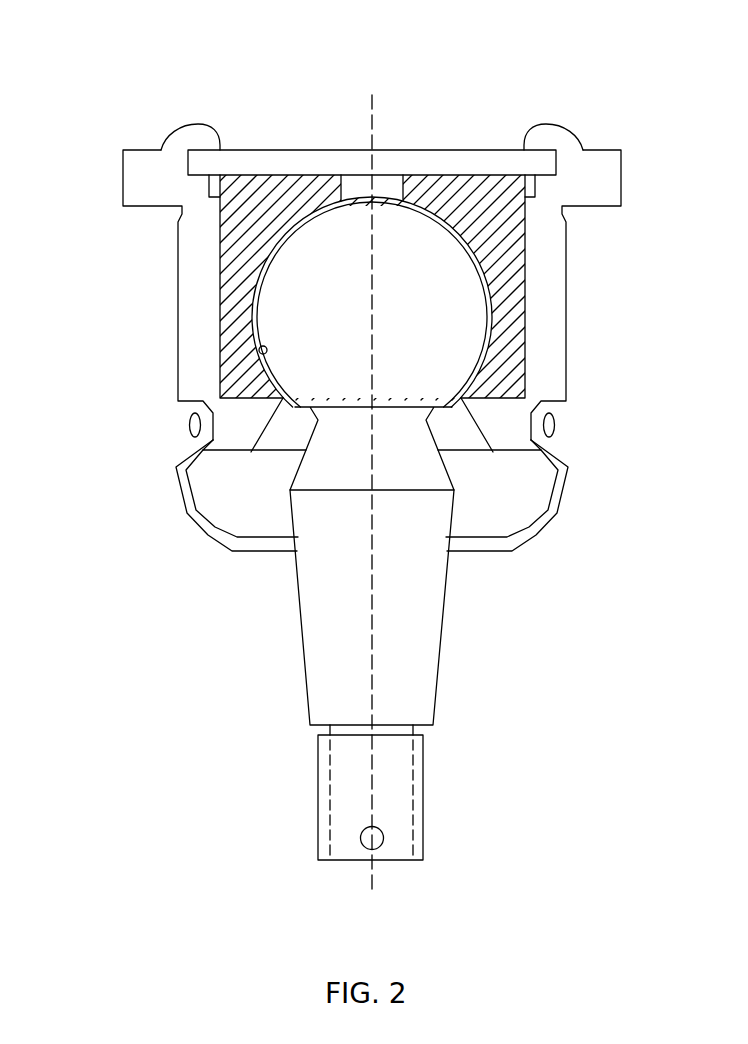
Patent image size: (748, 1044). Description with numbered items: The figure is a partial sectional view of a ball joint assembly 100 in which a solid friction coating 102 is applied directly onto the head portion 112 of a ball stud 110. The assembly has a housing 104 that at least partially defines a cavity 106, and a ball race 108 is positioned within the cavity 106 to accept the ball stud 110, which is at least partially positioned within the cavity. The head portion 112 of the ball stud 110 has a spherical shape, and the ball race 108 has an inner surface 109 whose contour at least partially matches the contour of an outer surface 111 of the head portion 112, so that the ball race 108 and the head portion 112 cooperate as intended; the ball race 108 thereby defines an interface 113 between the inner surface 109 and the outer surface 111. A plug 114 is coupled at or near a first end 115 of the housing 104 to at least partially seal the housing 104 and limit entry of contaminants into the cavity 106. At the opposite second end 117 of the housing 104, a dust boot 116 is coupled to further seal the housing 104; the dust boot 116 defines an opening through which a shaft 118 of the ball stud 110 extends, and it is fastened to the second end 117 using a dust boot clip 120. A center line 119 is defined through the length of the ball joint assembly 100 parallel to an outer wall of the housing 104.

The ball joint assembly 100 is at (507, 88).
The solid friction coating 102 is at (505, 328).
The housing 104 is at (195, 290).
The cavity 106 is at (249, 205).
The ball race 108 is at (478, 207).
The inner surface 109 is at (490, 283).
The ball stud 110 is at (462, 612).
The outer surface 111 is at (255, 398).
The head portion 112 is at (327, 358).
The interface 113 is at (258, 350).
The plug 114 is at (200, 160).
The first end 115 is at (148, 112).
The dust boot 116 is at (165, 506).
The second end 117 is at (162, 458).
The shaft 118 is at (415, 668).
The center line 119 is at (372, 703).
The dust boot clip 120 is at (185, 426).